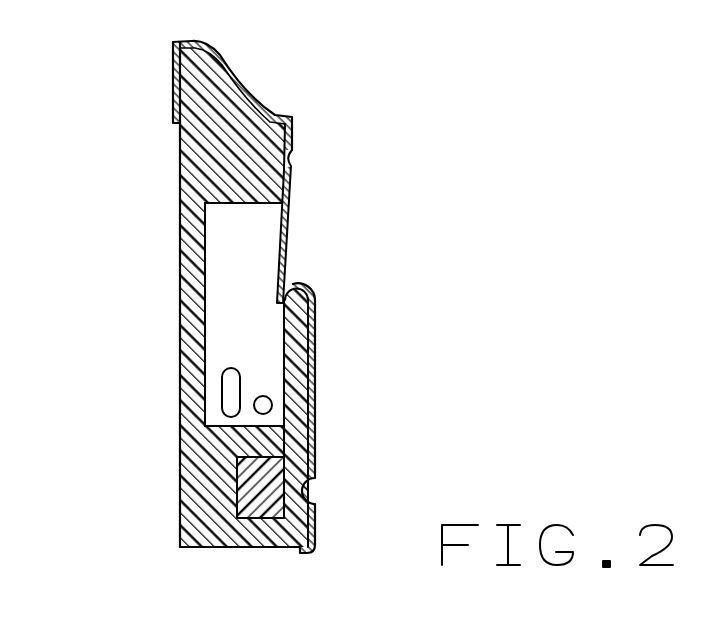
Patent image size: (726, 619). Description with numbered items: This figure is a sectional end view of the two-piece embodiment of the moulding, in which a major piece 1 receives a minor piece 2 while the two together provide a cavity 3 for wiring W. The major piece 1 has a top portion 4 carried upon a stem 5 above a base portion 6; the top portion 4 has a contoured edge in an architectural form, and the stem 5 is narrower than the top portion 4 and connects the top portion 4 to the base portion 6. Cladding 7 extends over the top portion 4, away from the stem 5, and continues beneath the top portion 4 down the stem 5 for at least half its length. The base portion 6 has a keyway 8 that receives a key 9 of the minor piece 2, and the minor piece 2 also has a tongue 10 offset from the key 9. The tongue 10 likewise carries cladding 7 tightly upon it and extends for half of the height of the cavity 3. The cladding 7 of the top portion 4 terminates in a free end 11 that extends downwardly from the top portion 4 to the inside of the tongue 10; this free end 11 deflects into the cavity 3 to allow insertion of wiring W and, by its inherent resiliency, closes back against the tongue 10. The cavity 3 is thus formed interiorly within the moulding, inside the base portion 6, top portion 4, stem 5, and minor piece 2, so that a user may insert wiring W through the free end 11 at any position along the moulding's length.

The major piece 1 is at (225, 160).
The minor piece 2 is at (290, 412).
The cavity 3 is at (235, 287).
The top portion 4 is at (225, 90).
The stem 5 is at (195, 330).
The base portion 6 is at (220, 475).
The cladding 7 is at (215, 47).
The keyway 8 is at (237, 488).
The key 9 is at (272, 490).
The tongue 10 is at (293, 358).
The free end 11 is at (290, 232).
The wiring W is at (232, 385).